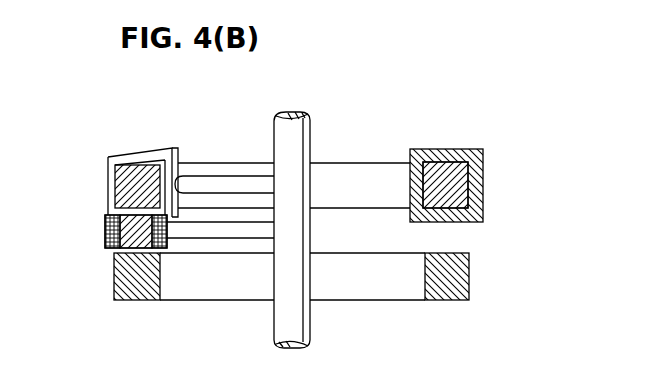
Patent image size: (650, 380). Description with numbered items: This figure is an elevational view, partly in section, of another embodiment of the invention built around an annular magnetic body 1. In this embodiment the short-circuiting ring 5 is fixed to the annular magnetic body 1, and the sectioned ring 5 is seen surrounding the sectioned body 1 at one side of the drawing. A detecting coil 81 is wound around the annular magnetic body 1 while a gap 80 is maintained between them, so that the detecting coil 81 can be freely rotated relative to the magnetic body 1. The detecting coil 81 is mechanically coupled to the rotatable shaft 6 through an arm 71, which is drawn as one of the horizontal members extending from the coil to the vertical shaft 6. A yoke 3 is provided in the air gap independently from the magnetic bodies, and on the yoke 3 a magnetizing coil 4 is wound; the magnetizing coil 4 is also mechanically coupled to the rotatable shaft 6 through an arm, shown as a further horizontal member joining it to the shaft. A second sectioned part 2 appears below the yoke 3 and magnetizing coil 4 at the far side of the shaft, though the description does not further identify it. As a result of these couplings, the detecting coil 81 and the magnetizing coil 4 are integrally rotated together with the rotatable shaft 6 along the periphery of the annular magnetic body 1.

The annular magnetic body 1 is at (482, 190).
The support plate 2 is at (469, 273).
The yoke 3 is at (114, 257).
The magnetizing coil 4 is at (105, 229).
The short-circuiting ring 5 is at (452, 150).
The rotatable shaft 6 is at (310, 136).
The arm 71 is at (216, 175).
The gap 80 is at (150, 162).
The detecting coil 81 is at (158, 150).